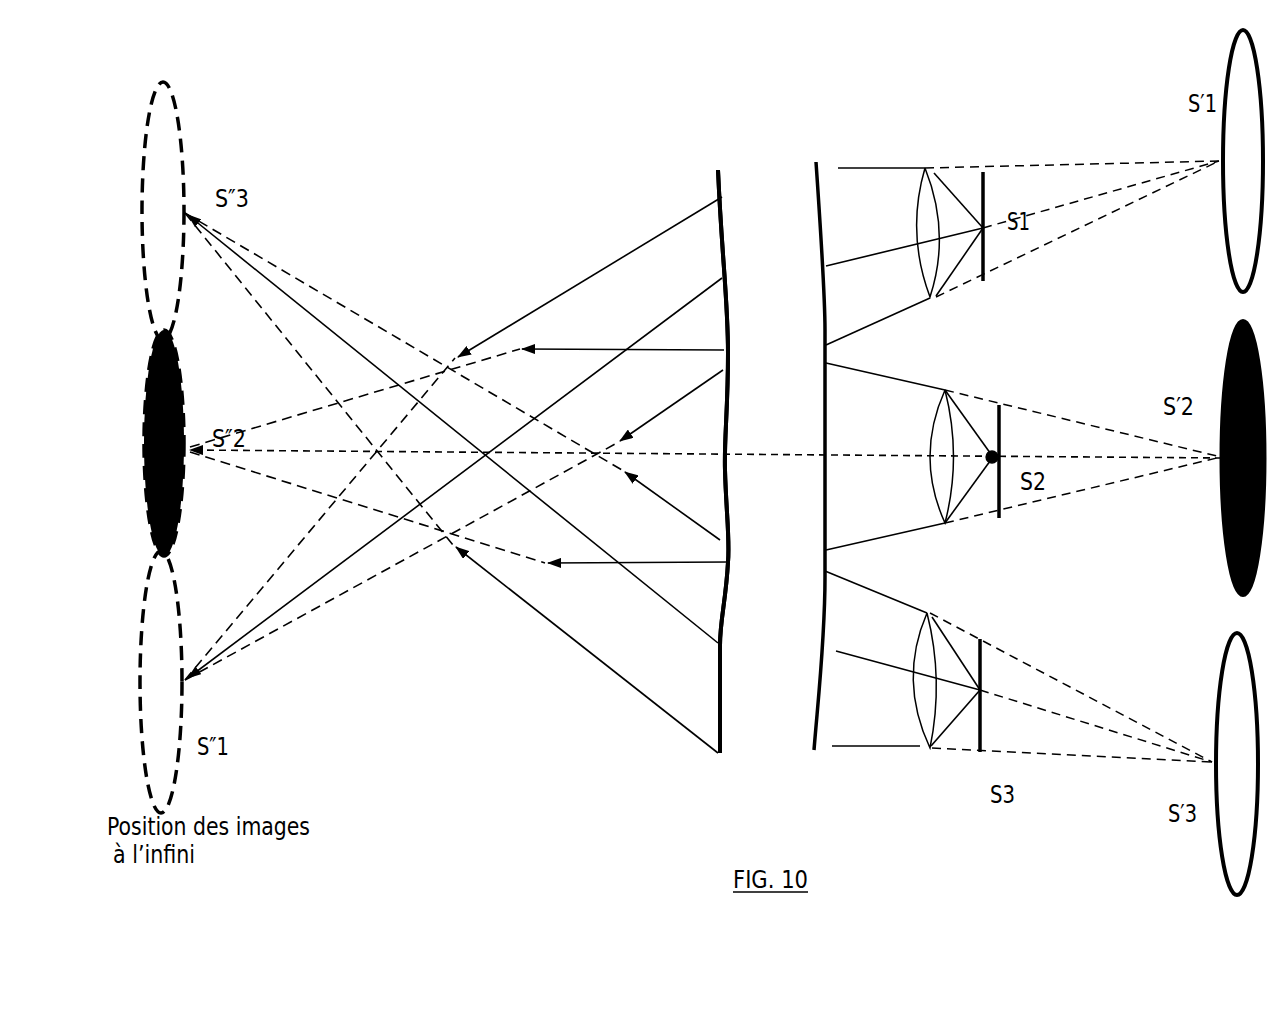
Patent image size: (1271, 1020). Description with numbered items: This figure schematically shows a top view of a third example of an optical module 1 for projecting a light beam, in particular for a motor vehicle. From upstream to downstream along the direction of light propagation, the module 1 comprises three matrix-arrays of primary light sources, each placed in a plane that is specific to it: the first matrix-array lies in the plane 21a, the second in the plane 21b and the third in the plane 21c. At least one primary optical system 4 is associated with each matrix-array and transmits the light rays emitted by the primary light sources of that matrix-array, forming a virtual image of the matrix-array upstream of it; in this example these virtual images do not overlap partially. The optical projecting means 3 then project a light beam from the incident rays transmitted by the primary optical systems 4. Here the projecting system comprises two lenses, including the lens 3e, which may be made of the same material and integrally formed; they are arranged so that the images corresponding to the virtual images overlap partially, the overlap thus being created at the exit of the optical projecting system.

The optical module 1 is at (542, 97).
The optical projecting means 3 is at (733, 190).
The lens of the optical projecting system 3e is at (812, 173).
The primary optical system 4 is at (923, 190).
The plane of matrix-array S1 21a is at (982, 172).
The plane of matrix-array S2 21b is at (1003, 414).
The plane of matrix-array S3 21c is at (985, 667).